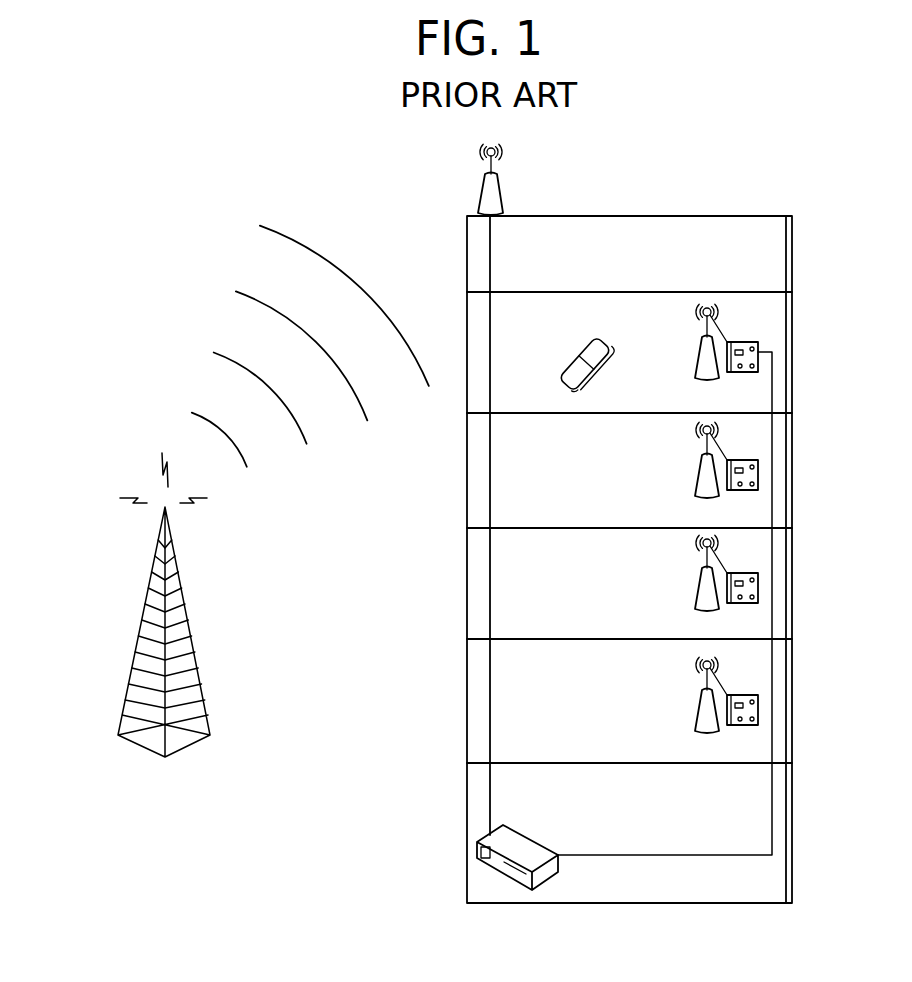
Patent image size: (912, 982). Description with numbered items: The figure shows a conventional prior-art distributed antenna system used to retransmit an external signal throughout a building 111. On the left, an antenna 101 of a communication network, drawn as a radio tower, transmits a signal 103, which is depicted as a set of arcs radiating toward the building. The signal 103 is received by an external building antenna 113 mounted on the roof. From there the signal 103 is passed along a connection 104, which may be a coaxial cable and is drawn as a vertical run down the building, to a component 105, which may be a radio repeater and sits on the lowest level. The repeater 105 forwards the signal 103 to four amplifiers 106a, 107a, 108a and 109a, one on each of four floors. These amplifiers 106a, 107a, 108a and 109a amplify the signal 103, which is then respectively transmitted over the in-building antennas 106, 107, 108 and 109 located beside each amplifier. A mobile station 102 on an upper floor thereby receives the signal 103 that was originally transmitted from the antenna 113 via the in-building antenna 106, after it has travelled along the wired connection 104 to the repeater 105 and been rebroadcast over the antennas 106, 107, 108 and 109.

The antenna 101 is at (156, 550).
The mobile station 102 is at (600, 343).
The signal 103 is at (203, 288).
The connection 104 is at (490, 453).
The component 105 is at (477, 852).
The in-building antenna 106 is at (697, 358).
The amplifier 106a is at (758, 344).
The in-building antenna 107 is at (697, 475).
The amplifier 107a is at (758, 456).
The in-building antenna 108 is at (697, 589).
The amplifier 108a is at (758, 568).
The in-building antenna 109 is at (697, 705).
The amplifier 109a is at (758, 684).
The building 111 is at (467, 565).
The external building antenna 113 is at (502, 194).